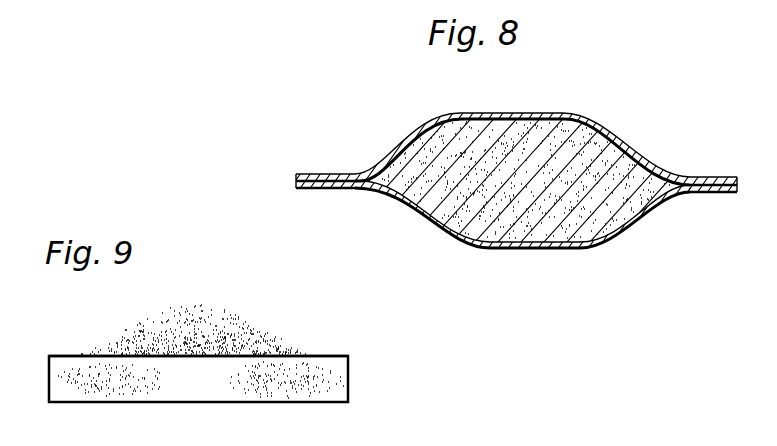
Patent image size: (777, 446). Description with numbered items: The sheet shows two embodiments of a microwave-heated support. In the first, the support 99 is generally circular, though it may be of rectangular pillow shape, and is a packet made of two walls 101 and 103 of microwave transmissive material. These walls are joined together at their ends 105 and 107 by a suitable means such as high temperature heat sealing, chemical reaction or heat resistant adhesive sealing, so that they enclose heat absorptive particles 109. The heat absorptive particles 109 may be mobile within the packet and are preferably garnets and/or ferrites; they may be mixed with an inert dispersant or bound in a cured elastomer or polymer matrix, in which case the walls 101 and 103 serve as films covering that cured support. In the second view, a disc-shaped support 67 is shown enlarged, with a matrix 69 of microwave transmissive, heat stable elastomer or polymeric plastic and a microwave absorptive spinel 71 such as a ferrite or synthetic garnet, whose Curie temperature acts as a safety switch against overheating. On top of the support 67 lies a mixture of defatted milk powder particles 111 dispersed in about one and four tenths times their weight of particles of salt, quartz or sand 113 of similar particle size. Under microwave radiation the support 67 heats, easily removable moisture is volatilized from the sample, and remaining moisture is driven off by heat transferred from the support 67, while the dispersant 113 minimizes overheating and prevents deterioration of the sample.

In FIG. 8, the support 99 is at (478, 178).
In FIG. 8, the wall 101 is at (463, 114).
In FIG. 8, the wall 103 is at (527, 250).
In FIG. 8, the end 105 is at (340, 174).
In FIG. 8, the end 107 is at (709, 177).
In FIG. 8, the heat absorptive particles 109 is at (517, 120).
In FIG. 9, the support 67 is at (229, 376).
In FIG. 9, the matrix 69 is at (297, 362).
In FIG. 9, the microwave absorptive spinel 71 is at (250, 393).
In FIG. 9, the defatted milk powder particles 111 is at (189, 315).
In FIG. 9, the dispersant 113 is at (204, 320).